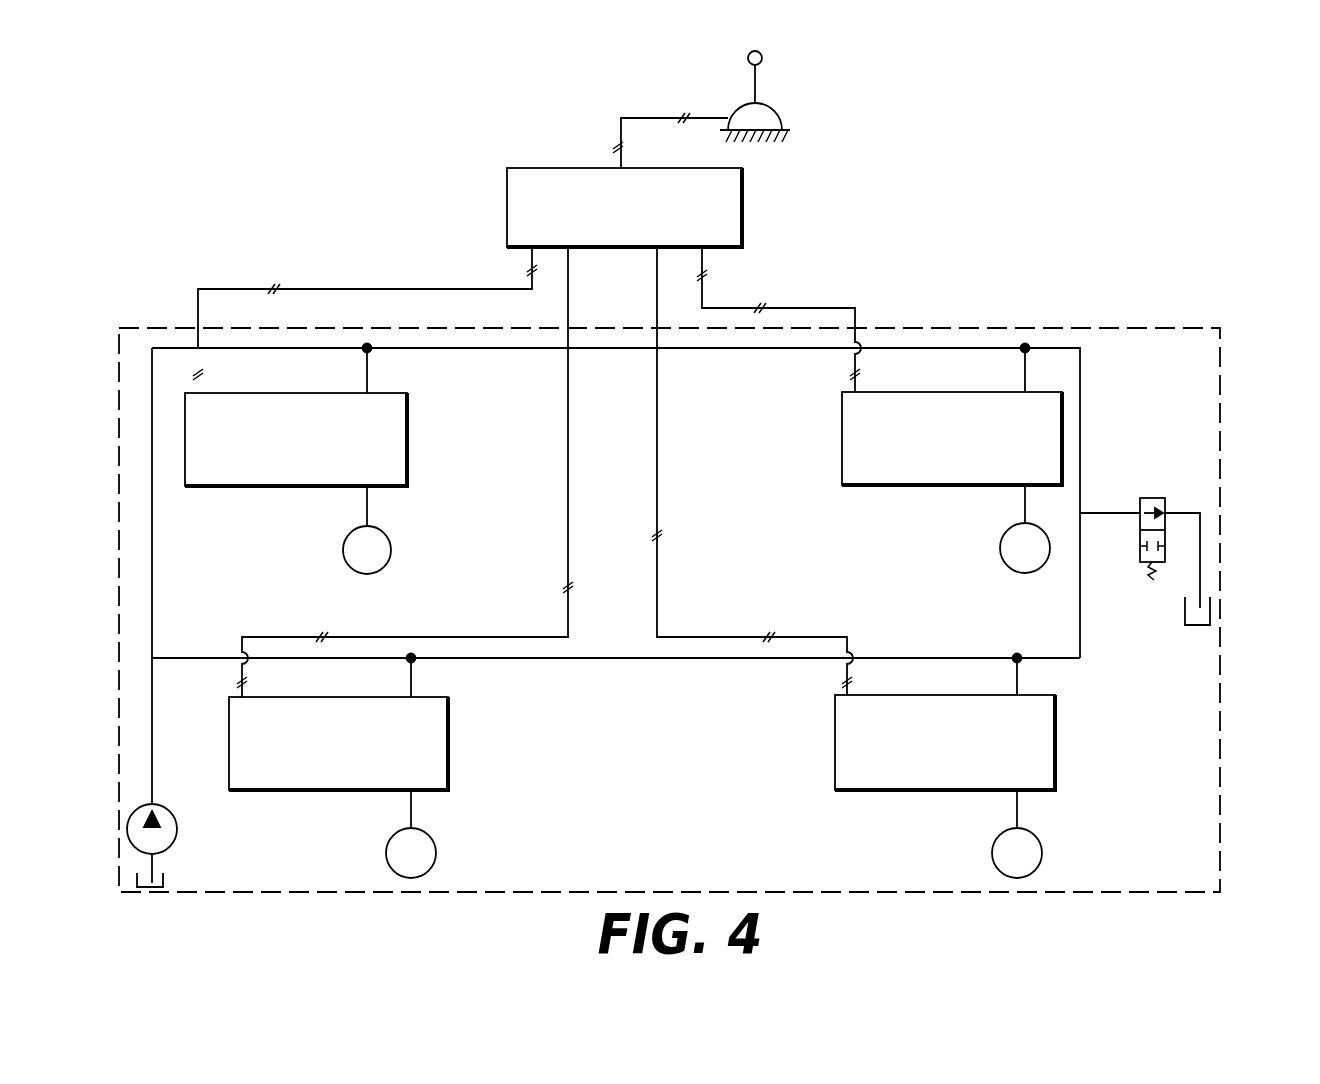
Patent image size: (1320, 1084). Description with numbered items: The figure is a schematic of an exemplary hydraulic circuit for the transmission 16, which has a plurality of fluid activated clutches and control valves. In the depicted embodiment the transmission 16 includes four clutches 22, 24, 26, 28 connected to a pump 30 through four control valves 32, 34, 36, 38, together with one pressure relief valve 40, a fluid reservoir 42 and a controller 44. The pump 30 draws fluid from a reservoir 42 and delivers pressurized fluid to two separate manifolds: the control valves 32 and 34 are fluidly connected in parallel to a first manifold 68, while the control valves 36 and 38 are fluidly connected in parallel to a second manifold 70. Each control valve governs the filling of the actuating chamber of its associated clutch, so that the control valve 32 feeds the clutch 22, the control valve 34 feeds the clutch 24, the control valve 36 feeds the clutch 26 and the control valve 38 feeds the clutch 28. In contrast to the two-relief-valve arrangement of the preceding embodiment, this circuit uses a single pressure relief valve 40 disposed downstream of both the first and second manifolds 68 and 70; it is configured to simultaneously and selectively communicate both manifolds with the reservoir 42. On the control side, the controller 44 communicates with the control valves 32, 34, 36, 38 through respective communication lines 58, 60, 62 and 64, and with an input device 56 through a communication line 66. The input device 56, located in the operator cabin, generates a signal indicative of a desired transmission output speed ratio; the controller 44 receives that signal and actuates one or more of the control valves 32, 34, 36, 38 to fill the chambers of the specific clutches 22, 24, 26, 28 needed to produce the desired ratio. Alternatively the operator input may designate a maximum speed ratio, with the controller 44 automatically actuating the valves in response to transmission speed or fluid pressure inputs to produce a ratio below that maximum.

The transmission 16 is at (1222, 803).
The clutch 22 is at (391, 549).
The clutch 24 is at (1000, 553).
The clutch 26 is at (436, 853).
The clutch 28 is at (1042, 846).
The pump 30 is at (177, 822).
The control valve 32 is at (296, 439).
The control valve 34 is at (952, 438).
The control valve 36 is at (338, 743).
The control valve 38 is at (945, 742).
The pressure relief valve 40 is at (1150, 498).
The fluid reservoir 42 is at (163, 879).
The controller 44 is at (742, 214).
The input device 56 is at (762, 58).
The communication line 58 is at (338, 289).
The communication line 60 is at (822, 308).
The communication line 62 is at (568, 557).
The communication line 64 is at (657, 490).
The communication line 66 is at (618, 127).
The first manifold 68 is at (176, 347).
The second manifold 70 is at (200, 658).